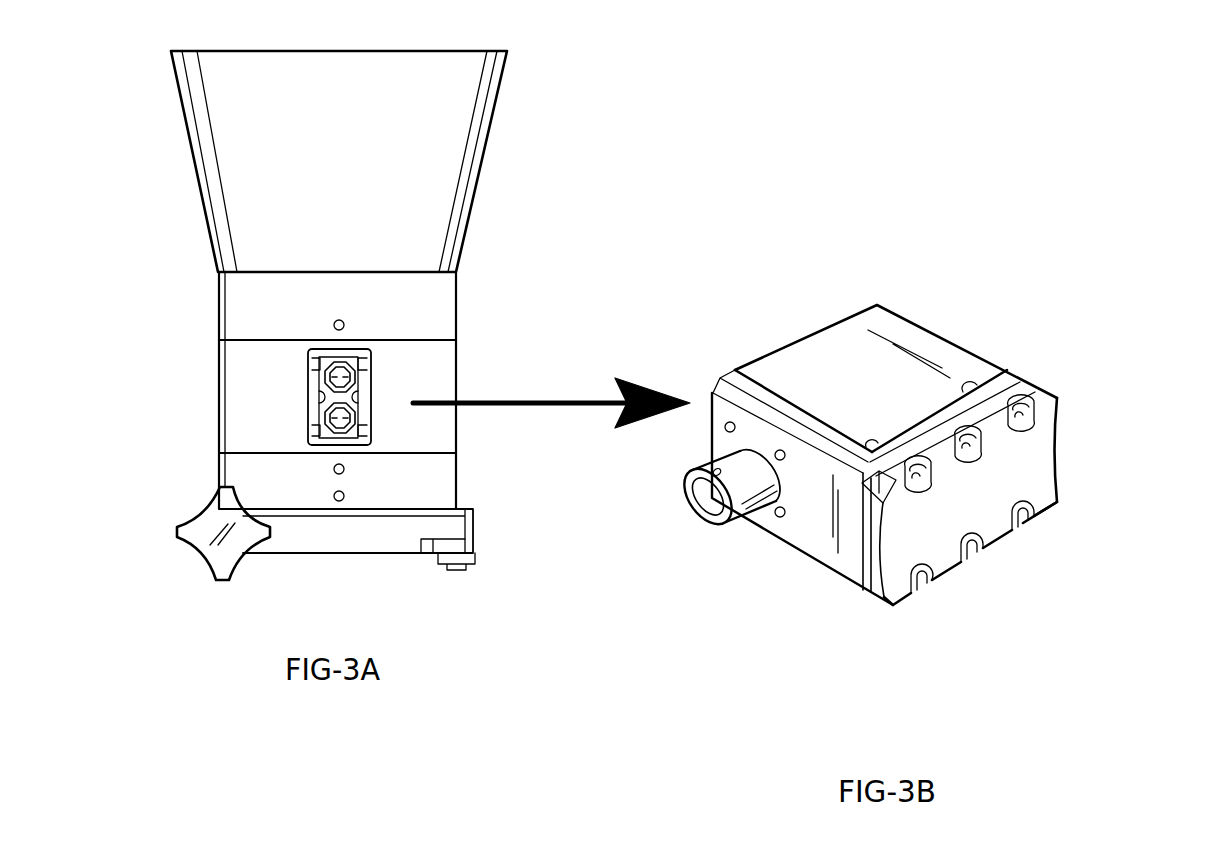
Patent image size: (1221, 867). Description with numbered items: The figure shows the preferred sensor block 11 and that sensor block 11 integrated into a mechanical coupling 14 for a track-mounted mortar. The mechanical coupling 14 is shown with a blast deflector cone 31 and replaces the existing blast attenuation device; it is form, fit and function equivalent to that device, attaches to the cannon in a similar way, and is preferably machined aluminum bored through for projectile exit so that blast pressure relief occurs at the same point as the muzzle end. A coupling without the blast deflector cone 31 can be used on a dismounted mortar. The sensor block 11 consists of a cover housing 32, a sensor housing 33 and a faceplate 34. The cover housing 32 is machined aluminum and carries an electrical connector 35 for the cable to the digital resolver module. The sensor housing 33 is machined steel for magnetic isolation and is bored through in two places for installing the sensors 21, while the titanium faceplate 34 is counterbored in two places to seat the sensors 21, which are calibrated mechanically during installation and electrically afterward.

In FIG. 3A, the blast deflector cone 31 is at (483, 158).
In FIG. 3A, the mechanical coupling 14 is at (213, 392).
In FIG. 3A, the sensor block 11 is at (373, 350).
In FIG. 3A, the sensors 21 is at (357, 416).
In FIG. 3B, the cover housing 32 is at (910, 318).
In FIG. 3B, the sensor housing 33 is at (1027, 383).
In FIG. 3B, the faceplate 34 is at (1057, 458).
In FIG. 3B, the electrical connector 35 is at (688, 512).